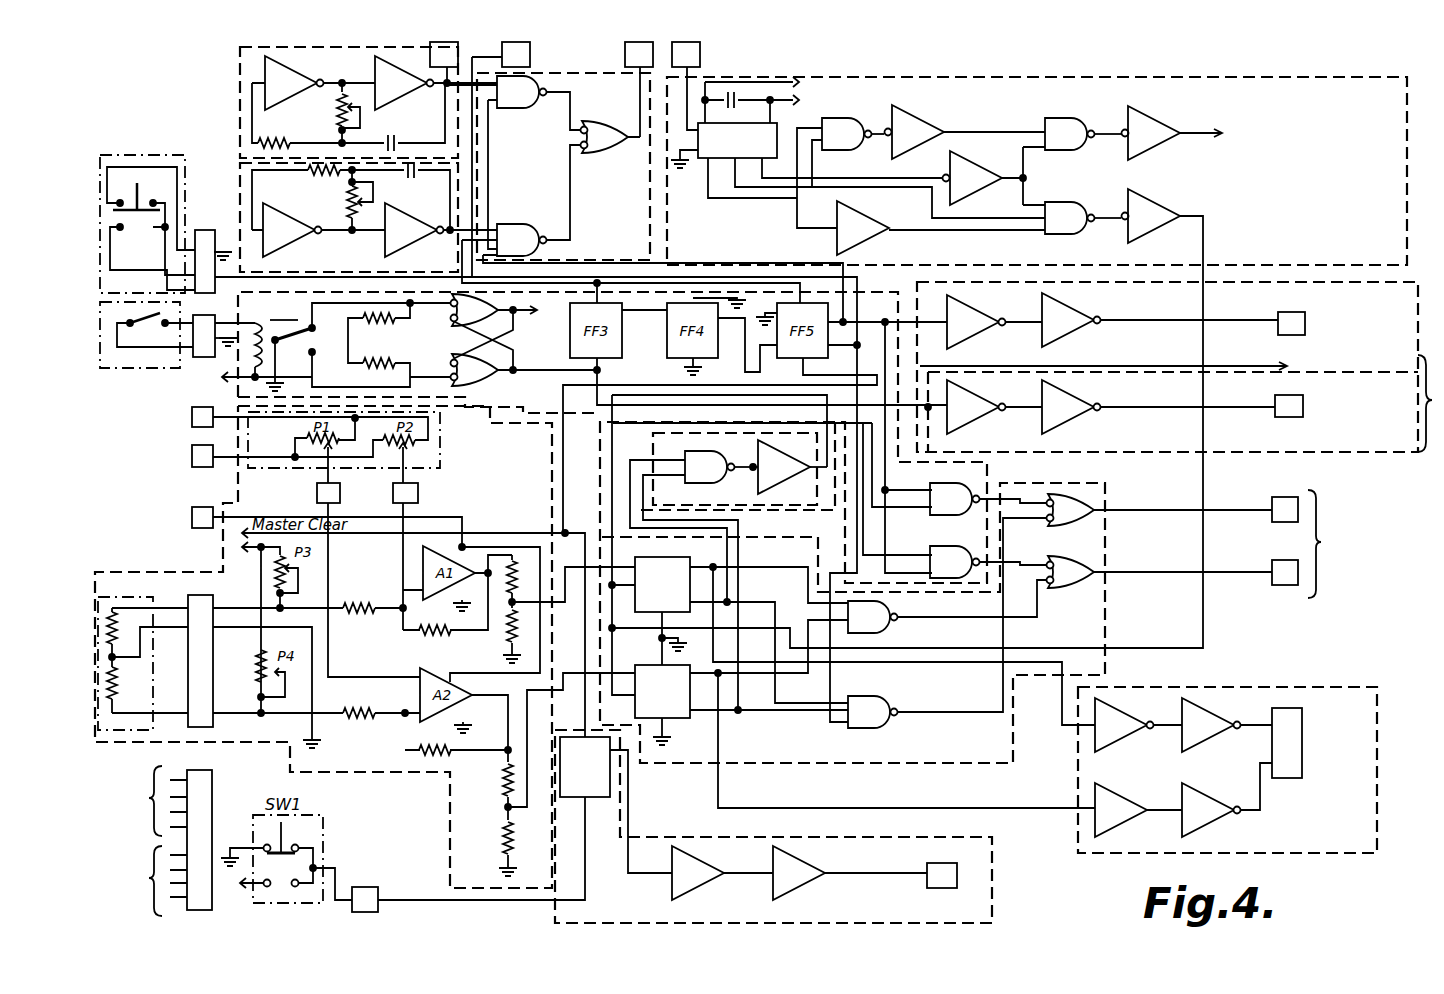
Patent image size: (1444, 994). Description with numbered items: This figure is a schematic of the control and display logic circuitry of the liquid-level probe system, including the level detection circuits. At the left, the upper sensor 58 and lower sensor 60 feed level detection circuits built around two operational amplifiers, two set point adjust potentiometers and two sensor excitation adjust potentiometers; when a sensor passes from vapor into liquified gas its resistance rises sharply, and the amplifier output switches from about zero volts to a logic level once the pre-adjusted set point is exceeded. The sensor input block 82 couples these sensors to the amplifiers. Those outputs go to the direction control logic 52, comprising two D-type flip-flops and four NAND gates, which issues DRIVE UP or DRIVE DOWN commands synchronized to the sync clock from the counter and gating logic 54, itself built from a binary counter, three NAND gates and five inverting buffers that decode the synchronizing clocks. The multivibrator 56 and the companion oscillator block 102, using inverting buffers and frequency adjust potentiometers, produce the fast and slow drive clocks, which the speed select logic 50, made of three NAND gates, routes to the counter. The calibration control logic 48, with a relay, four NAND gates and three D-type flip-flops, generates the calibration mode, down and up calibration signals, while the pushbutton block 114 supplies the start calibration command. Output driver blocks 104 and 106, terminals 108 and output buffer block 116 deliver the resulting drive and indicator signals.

The calibration control logic 48 is at (238, 384).
The speed select logic 50 is at (587, 73).
The direction control logic 52 is at (918, 763).
The counter and gating logic 54 is at (909, 77).
The multivibrator 56 is at (240, 63).
The upper sensor 58 is at (140, 633).
The lower sensor 60 is at (145, 694).
The sensor input circuit 82 is at (114, 600).
The amplifier circuit 102 is at (240, 195).
The output driver circuit 104 is at (1326, 452).
The output driver circuit 106 is at (1335, 687).
The output terminals 108 is at (1419, 452).
The pushbutton switch circuit 114 is at (170, 155).
The output amplifier circuit 116 is at (992, 843).